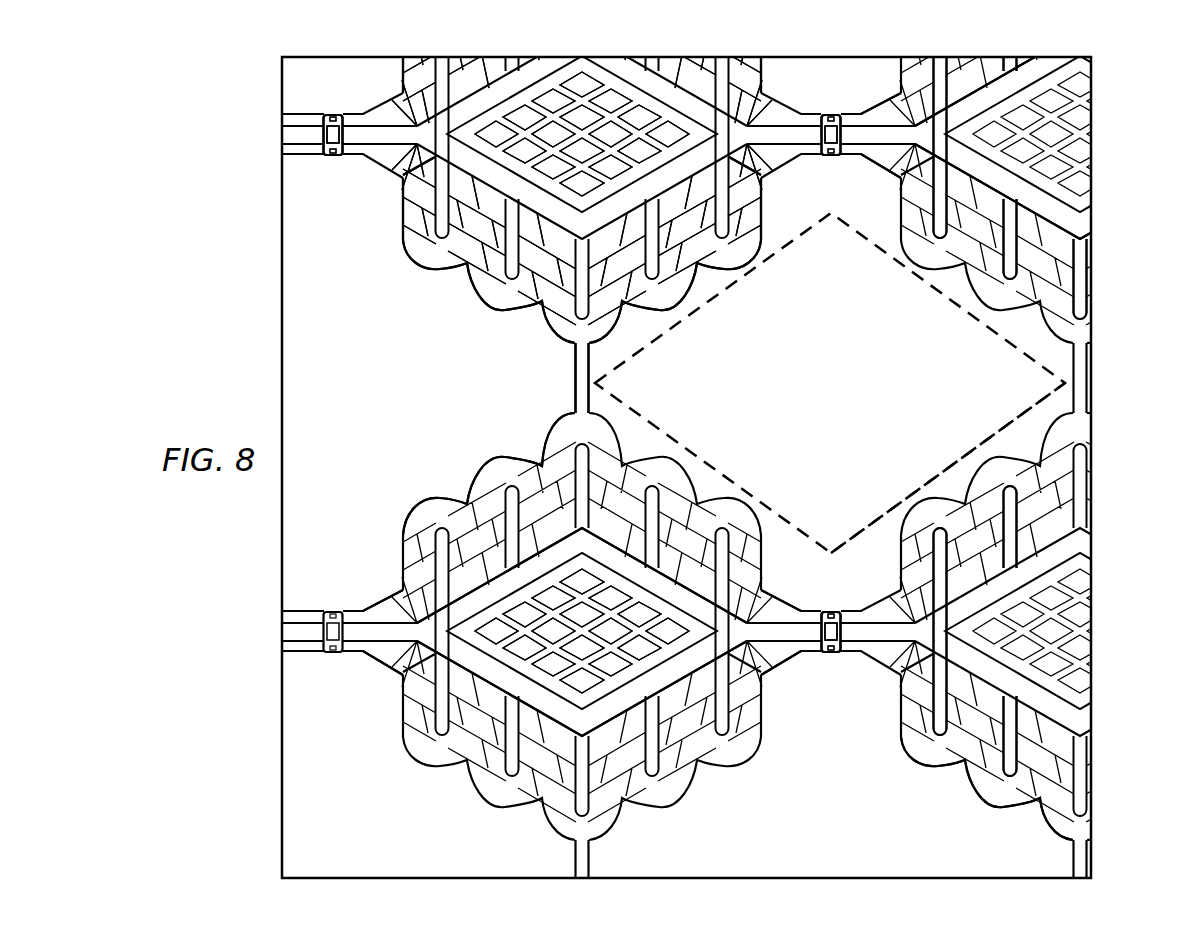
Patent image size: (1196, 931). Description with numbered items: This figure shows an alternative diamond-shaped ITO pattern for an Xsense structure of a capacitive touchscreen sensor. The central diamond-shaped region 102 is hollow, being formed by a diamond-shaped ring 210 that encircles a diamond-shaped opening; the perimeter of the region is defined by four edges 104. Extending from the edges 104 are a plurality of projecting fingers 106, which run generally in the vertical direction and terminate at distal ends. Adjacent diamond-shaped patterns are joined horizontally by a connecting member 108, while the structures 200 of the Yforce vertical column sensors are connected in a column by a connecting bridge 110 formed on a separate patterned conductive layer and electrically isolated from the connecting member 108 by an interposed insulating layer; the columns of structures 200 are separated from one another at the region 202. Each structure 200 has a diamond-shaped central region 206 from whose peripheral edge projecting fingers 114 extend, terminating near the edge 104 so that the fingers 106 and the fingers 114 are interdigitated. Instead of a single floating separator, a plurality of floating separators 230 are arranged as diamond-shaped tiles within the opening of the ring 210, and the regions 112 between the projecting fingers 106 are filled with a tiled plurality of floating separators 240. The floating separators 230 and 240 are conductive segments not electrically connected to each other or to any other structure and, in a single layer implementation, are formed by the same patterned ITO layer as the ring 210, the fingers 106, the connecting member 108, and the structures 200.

The central diamond-shaped region 102 is at (935, 130).
The edge 104 is at (1062, 230).
The projecting finger 106 is at (1080, 313).
The connecting member 108 is at (878, 628).
The connecting bridge 110 is at (831, 115).
The region between projecting fingers 112 is at (705, 248).
The projecting finger 114 is at (543, 462).
The structure 200 is at (850, 397).
The region 202 is at (575, 384).
The central region 206 is at (813, 533).
The diamond-shaped ring 210 is at (484, 594).
The floating separator 230 is at (413, 142).
The floating separator 240 is at (472, 226).